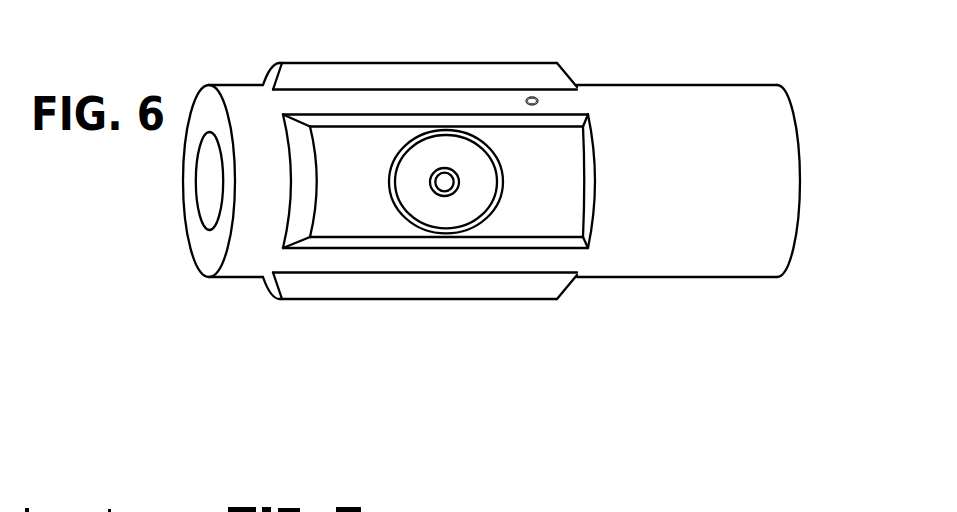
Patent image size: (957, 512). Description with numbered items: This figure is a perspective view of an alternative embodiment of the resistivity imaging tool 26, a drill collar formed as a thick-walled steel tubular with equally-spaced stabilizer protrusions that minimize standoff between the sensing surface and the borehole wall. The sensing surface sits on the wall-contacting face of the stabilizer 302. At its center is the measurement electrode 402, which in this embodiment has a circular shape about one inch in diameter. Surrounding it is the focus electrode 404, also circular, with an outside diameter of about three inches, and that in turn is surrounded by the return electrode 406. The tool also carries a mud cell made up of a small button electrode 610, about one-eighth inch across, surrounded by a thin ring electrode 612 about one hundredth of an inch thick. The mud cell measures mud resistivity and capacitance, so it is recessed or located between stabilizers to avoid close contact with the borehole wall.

The resistivity imaging tool 26 is at (230, 278).
The stabilizer 302 is at (594, 178).
The measurement electrode 402 is at (443, 171).
The focus electrode 404 is at (416, 165).
The return electrode 406 is at (350, 158).
The button electrode 610 is at (537, 95).
The ring electrode 612 is at (526, 96).